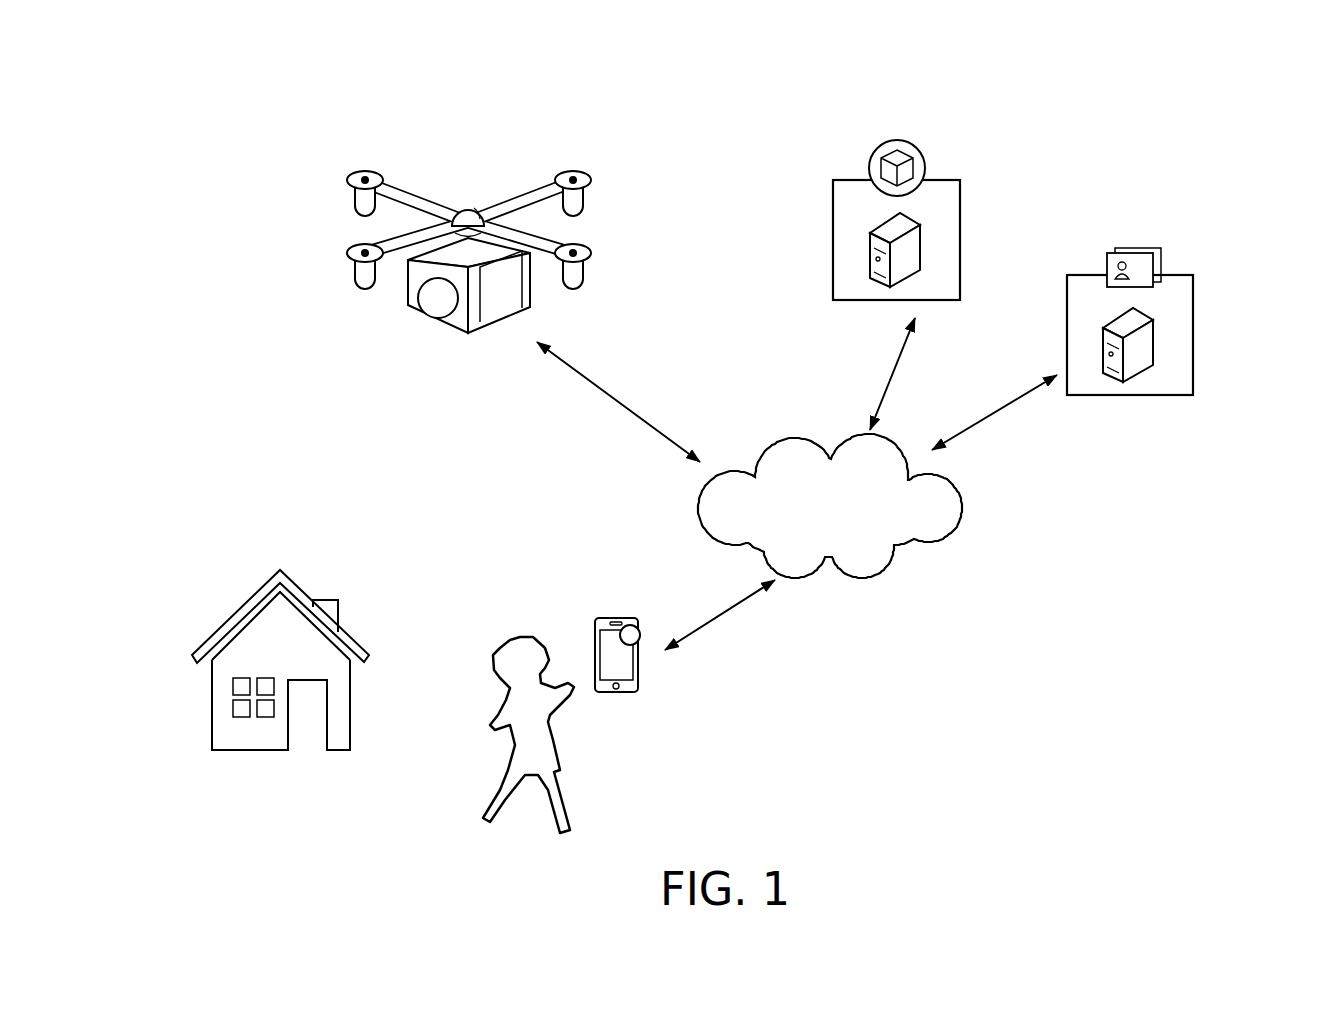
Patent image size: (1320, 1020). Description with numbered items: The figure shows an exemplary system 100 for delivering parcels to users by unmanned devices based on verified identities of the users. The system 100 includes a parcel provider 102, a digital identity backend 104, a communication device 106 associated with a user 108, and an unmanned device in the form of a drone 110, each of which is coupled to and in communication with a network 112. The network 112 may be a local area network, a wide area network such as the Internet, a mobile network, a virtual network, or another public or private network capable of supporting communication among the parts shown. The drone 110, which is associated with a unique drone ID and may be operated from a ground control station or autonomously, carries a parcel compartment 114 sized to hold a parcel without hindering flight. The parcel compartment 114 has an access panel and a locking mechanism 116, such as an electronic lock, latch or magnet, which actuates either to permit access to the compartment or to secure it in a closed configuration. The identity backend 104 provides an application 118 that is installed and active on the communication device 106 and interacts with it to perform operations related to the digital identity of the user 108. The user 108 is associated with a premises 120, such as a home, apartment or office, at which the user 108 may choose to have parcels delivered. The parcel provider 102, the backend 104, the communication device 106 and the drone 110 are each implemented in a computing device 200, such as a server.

The system 100 is at (333, 100).
The drone 110 is at (452, 294).
The parcel compartment 114 is at (460, 344).
The locking mechanism 116 is at (427, 330).
The parcel provider 102 is at (833, 237).
The digital identity backend 104 is at (1067, 335).
The computing device 200 is at (920, 246).
The network 112 is at (790, 440).
The premises 120 is at (222, 600).
The user 108 is at (478, 635).
The communication device 106 is at (745, 667).
The application 118 is at (631, 625).